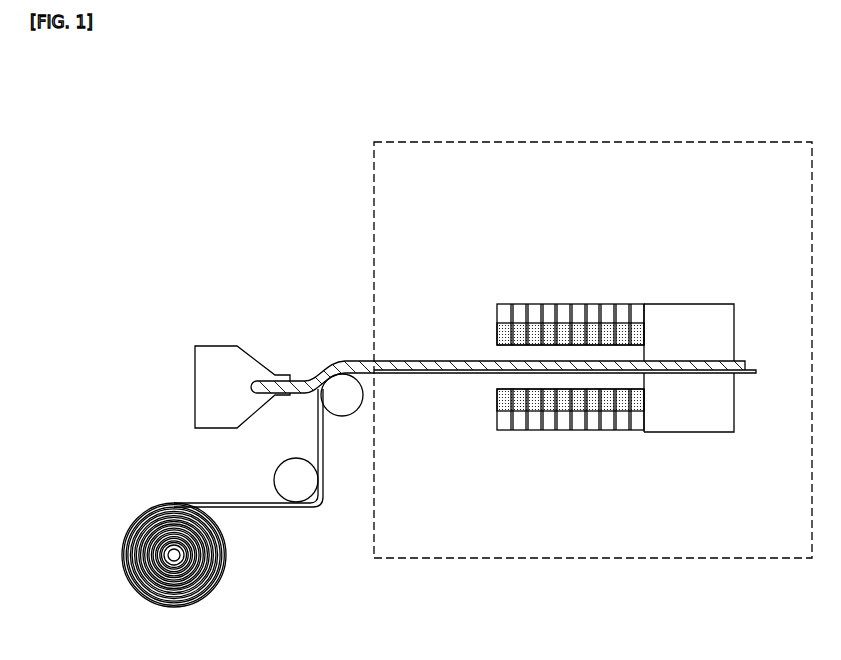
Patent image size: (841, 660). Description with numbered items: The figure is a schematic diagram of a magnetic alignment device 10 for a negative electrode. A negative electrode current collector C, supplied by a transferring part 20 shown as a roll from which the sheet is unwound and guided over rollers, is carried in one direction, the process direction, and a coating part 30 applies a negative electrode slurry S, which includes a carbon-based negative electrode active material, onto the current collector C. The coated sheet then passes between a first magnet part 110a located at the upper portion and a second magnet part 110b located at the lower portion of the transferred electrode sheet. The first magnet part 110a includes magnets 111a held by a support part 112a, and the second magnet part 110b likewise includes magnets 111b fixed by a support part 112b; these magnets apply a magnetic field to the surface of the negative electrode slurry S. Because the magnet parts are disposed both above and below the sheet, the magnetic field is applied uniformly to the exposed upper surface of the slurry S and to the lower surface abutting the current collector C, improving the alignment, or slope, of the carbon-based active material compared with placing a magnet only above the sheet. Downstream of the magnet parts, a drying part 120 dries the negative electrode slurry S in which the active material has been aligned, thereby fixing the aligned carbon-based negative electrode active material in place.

The magnetic alignment device 10 is at (615, 142).
The transferring part 20 is at (181, 558).
The coating part 30 is at (217, 360).
The first magnet part 110a is at (570, 273).
The magnets 111a is at (607, 327).
The support part 112a is at (503, 305).
The second magnet part 110b is at (571, 465).
The magnets 111b is at (608, 404).
The support part 112b is at (502, 426).
The drying part 120 is at (688, 304).
The negative electrode slurry S is at (452, 366).
The negative electrode current collector C is at (408, 373).